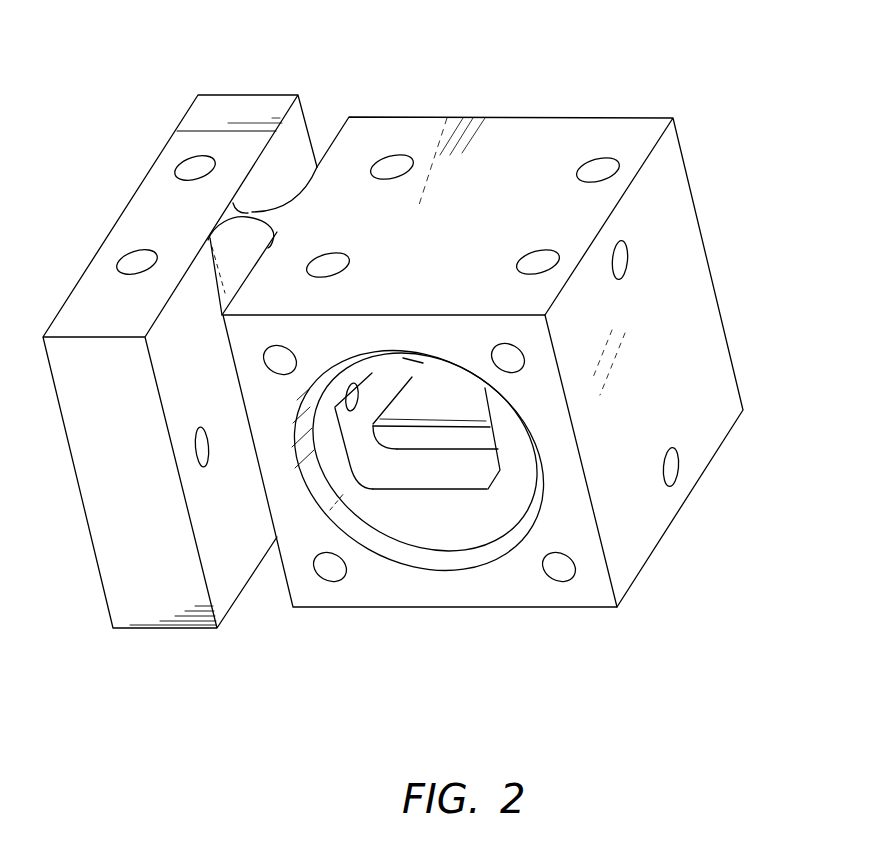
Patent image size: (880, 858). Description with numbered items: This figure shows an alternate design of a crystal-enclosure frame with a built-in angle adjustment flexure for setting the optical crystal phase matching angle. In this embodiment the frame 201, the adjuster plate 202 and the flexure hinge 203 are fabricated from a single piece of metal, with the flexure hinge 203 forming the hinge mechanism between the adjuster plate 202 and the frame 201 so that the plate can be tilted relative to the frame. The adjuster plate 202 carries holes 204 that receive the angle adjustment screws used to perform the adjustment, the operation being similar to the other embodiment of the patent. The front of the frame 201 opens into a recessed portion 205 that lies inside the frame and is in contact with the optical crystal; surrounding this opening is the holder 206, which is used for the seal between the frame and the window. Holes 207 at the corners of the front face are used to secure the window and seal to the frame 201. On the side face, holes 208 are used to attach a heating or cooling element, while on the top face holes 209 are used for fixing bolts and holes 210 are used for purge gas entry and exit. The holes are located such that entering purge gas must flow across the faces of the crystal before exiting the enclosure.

The frame 201 is at (486, 170).
The adjuster plate 202 is at (237, 117).
The flexure hinge 203 is at (248, 212).
The holes for angle adjustment screws 204 is at (210, 465).
The recessed portion 205 is at (470, 436).
The holder 206 is at (427, 531).
The holes 207 is at (557, 582).
The holes 208 is at (677, 475).
The holes 209 is at (608, 157).
The holes 210 is at (392, 157).